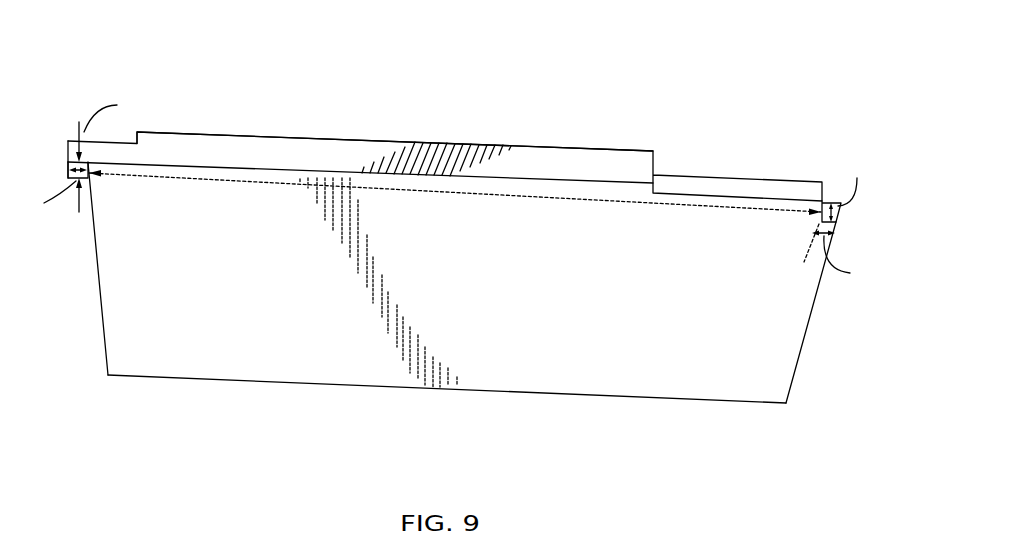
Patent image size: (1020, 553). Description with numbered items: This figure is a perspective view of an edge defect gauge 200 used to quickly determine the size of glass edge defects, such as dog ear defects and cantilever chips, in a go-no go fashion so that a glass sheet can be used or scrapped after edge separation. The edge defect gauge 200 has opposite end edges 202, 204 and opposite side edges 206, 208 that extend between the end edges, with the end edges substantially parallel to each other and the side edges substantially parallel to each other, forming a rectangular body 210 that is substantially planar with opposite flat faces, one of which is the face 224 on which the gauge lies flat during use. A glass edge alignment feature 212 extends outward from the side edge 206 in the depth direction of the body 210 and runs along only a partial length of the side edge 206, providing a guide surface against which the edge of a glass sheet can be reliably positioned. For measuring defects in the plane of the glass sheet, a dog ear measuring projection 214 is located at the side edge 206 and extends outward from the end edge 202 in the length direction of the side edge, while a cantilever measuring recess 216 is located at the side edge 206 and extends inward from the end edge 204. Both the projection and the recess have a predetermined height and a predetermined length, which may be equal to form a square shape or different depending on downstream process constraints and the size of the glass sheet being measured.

The edge defect gauge 200 is at (477, 242).
The end edge 202 is at (477, 254).
The end edge 204 is at (820, 352).
The side edge 206 is at (198, 138).
The side edge 208 is at (313, 393).
The rectangular body 210 is at (622, 345).
The glass edge alignment feature 212 is at (445, 126).
The dog ear measuring projection 214 is at (75, 128).
The cantilever measuring recess 216 is at (872, 204).
The face 224 is at (530, 368).